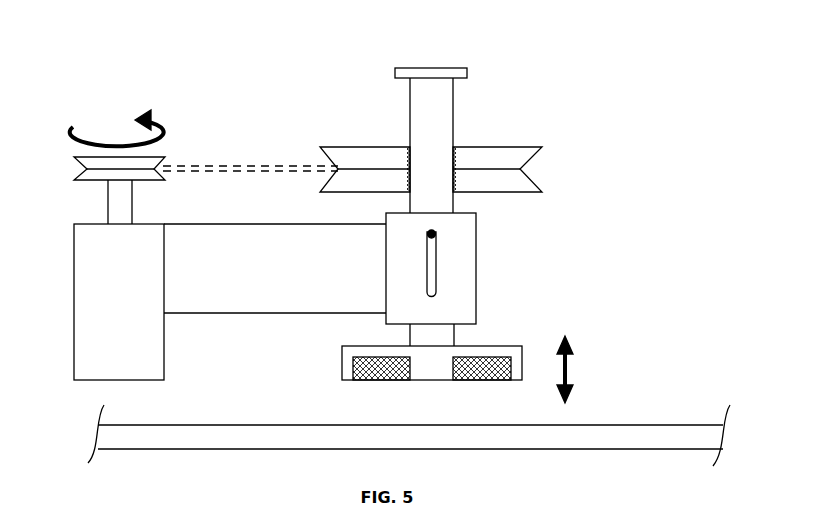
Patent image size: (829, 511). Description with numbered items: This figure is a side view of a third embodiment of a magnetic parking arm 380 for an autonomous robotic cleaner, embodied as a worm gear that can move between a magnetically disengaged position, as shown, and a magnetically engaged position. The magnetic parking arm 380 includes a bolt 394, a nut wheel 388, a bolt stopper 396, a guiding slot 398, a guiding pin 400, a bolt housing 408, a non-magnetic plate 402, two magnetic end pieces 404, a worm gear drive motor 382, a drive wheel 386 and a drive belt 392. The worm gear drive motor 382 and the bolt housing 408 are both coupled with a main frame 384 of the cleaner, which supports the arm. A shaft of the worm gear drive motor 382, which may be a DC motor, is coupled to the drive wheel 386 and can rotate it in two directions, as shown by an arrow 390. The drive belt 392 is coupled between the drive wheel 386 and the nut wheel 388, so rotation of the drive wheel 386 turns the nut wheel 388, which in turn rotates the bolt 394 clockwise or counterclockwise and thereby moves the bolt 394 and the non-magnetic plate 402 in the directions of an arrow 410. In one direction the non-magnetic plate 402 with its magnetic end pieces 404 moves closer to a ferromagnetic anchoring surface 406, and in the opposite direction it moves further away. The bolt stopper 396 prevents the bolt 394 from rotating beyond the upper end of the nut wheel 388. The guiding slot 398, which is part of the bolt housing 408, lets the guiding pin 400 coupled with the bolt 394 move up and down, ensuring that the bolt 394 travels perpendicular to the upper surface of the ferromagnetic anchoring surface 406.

The magnetic parking arm 380 is at (588, 93).
The worm gear drive motor 382 is at (110, 292).
The main frame 384 is at (285, 267).
The drive wheel 386 is at (140, 180).
The nut wheel 388 is at (353, 157).
The arrow 390 is at (156, 120).
The drive belt 392 is at (248, 170).
The bolt 394 is at (445, 117).
The bolt stopper 396 is at (443, 70).
The guiding slot 398 is at (432, 272).
The guiding pin 400 is at (440, 232).
The non-magnetic plate 402 is at (345, 350).
The magnetic end pieces 404 is at (382, 380).
The ferromagnetic anchoring surface 406 is at (203, 440).
The bolt housing 408 is at (452, 300).
The arrow 410 is at (568, 358).